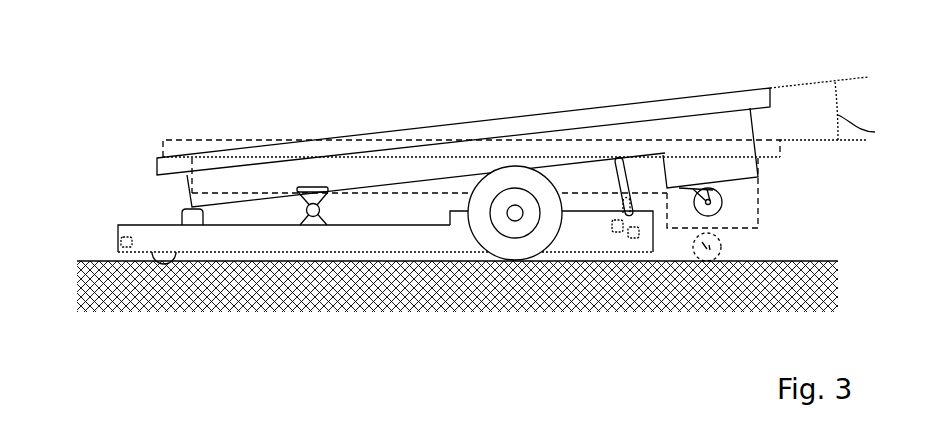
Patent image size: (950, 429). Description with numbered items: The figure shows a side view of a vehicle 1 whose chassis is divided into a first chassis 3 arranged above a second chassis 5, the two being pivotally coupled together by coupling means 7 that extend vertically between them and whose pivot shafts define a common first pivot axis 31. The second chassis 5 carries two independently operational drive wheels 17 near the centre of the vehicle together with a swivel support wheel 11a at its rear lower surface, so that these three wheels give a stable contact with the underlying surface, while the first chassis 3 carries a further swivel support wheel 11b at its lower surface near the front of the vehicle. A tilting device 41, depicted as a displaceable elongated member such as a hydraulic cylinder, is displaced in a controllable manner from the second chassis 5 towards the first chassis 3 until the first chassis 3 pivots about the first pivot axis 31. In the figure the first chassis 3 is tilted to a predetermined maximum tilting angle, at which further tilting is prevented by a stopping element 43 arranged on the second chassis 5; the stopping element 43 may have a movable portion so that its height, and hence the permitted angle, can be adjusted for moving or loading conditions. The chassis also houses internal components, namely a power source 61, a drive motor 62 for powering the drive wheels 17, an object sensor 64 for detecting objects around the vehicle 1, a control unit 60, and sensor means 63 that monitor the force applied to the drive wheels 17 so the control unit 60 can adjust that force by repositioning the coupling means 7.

The vehicle 1 is at (144, 83).
The first chassis 3 is at (725, 100).
The second chassis 5 is at (145, 237).
The coupling means 7 is at (313, 184).
The support wheel 11a is at (152, 255).
The support wheel 11b is at (722, 203).
The drive wheel 17 is at (513, 253).
The first pivot axis 31 is at (320, 210).
The tilting device 41 is at (617, 158).
The stopping element 43 is at (182, 214).
The control unit 60 is at (613, 232).
The power source 61 is at (632, 238).
The drive motor 62 is at (473, 245).
The sensor means 63 is at (492, 268).
The object sensor 64 is at (118, 238).